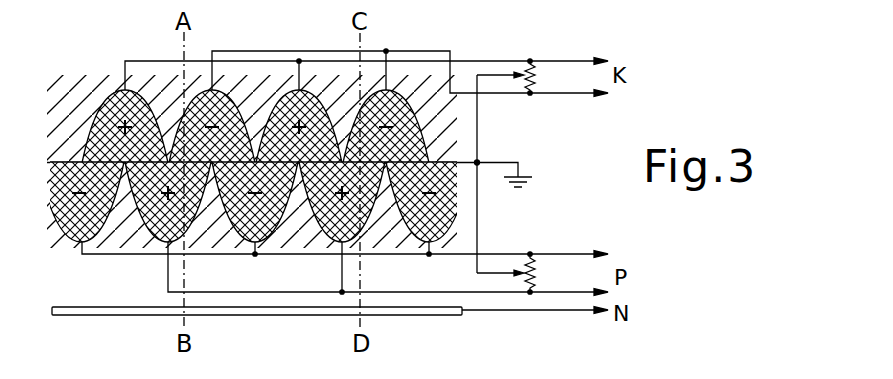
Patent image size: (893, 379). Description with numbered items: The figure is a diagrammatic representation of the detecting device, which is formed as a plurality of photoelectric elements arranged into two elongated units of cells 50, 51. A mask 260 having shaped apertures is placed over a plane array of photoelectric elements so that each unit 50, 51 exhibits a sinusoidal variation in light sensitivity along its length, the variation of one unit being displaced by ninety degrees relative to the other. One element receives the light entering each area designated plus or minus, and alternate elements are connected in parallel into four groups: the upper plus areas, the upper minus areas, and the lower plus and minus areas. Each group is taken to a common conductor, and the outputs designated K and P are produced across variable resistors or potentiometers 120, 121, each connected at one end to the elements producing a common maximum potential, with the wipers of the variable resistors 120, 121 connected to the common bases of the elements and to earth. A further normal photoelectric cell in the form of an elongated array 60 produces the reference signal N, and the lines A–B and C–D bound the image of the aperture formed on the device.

The unit of cells 50 is at (90, 142).
The unit of cells 51 is at (74, 215).
The normal photo-electric cell 60 is at (118, 312).
The variable resistor 120 is at (526, 77).
The variable resistor 121 is at (527, 273).
The mask 260 is at (456, 120).